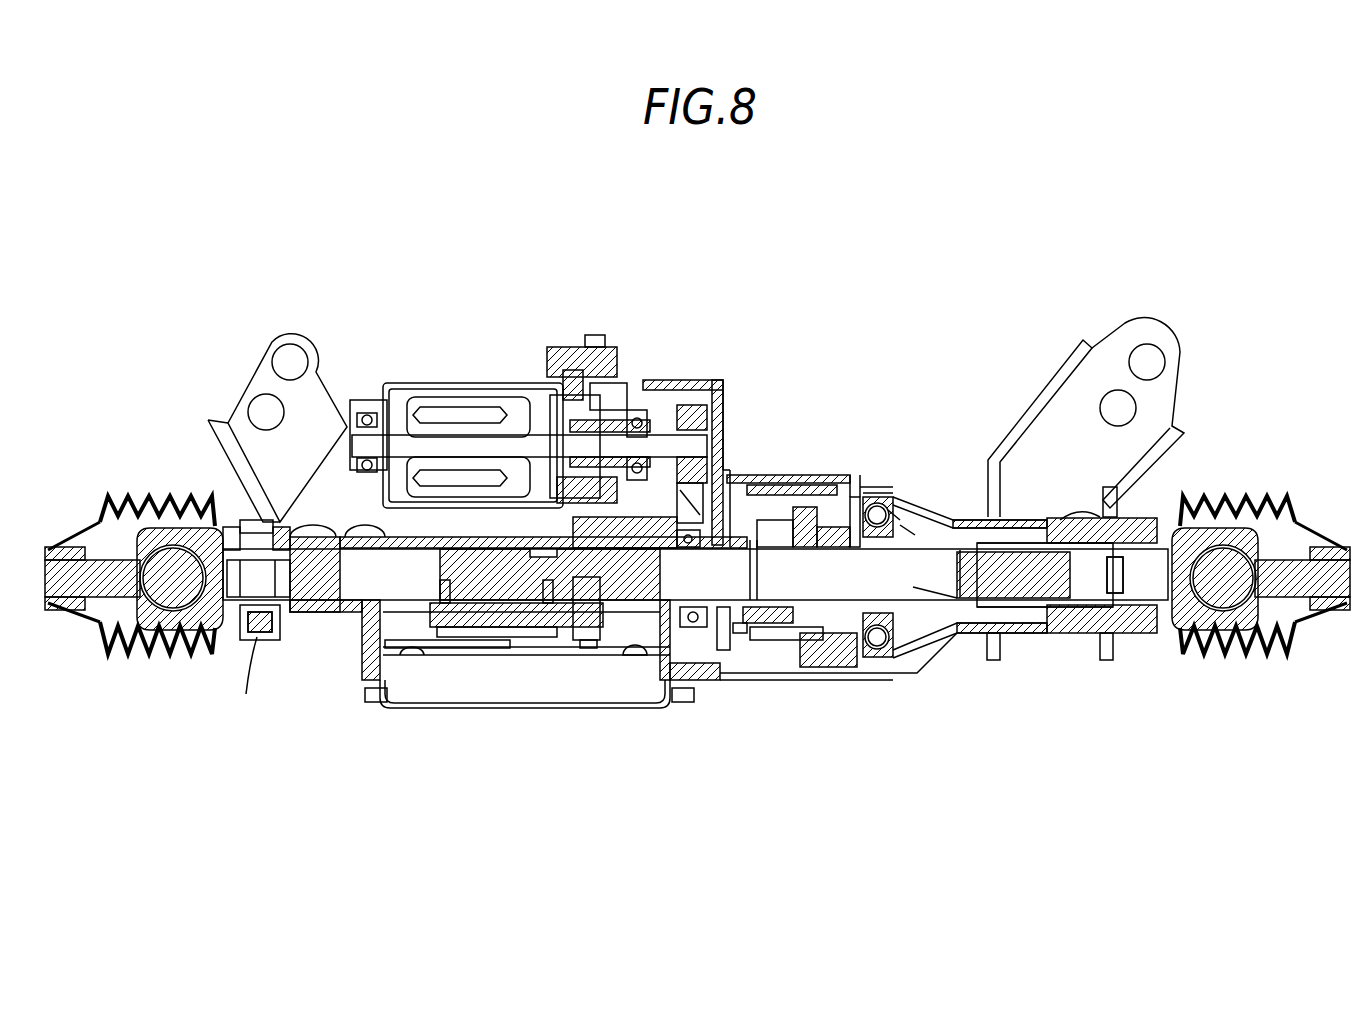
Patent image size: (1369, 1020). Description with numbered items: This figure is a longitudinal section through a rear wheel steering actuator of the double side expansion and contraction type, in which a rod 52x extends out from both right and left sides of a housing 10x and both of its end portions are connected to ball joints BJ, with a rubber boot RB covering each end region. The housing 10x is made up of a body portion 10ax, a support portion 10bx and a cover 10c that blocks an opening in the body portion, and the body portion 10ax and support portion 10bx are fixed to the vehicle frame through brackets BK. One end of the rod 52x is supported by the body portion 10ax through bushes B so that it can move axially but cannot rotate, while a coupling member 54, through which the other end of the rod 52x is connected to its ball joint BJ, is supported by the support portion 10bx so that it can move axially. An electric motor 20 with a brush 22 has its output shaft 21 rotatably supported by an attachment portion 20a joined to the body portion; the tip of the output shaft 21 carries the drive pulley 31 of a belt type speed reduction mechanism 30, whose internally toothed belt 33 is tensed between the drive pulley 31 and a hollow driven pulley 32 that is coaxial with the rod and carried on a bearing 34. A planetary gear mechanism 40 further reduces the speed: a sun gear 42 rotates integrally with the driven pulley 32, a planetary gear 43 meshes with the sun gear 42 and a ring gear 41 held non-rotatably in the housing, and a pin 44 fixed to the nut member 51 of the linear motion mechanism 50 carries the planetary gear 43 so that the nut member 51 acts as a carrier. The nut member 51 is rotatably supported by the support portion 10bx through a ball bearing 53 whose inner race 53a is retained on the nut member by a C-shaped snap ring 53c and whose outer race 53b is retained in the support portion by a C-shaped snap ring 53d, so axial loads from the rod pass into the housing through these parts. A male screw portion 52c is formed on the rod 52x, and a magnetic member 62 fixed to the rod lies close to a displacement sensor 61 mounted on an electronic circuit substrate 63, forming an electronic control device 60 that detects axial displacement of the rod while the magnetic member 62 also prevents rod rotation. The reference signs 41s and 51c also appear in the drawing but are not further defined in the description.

The housing 10x is at (709, 365).
The body portion 10ax is at (667, 380).
The support portion 10bx is at (1027, 633).
The cover 10c is at (587, 708).
The electric motor 20 is at (440, 378).
The attachment portion 20a is at (537, 383).
The output shaft 21 is at (660, 443).
The brush 22 is at (607, 412).
The belt type speed reduction mechanism 30 is at (713, 465).
The drive pulley 31 is at (720, 393).
The driven pulley 32 is at (720, 650).
The belt 33 is at (690, 493).
The bearing 34 is at (693, 628).
The planetary gear mechanism 40 is at (774, 510).
The ring gear 41 is at (757, 650).
The nut surface 41s is at (735, 640).
The sun gear 42 is at (833, 518).
The planetary gear 43 is at (777, 641).
The pin 44 is at (813, 668).
The linear motion mechanism 50 is at (837, 493).
The nut member 51 is at (840, 674).
The wall portion 51c is at (937, 590).
The rod 52x is at (313, 593).
The male screw portion 52c is at (957, 593).
The bearing 53 is at (876, 660).
The inner race 53a is at (892, 515).
The outer race 53b is at (880, 493).
The C-shaped snap ring 53c is at (905, 533).
The C-shaped snap ring 53d is at (860, 487).
The coupling member 54 is at (1087, 607).
The electronic control device 60 is at (547, 674).
The displacement sensor 61 is at (493, 650).
The magnetic member 62 is at (527, 617).
The electronic circuit substrate 63 is at (627, 655).
The bracket BK is at (322, 388).
The ball joint BJ is at (160, 527).
The rubber boot RB is at (193, 500).
The bush B is at (1135, 668).